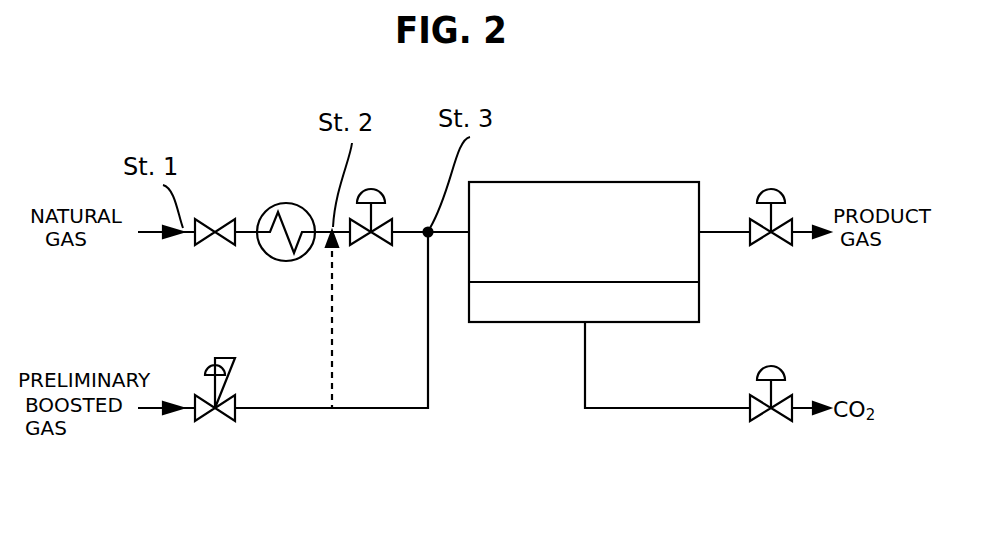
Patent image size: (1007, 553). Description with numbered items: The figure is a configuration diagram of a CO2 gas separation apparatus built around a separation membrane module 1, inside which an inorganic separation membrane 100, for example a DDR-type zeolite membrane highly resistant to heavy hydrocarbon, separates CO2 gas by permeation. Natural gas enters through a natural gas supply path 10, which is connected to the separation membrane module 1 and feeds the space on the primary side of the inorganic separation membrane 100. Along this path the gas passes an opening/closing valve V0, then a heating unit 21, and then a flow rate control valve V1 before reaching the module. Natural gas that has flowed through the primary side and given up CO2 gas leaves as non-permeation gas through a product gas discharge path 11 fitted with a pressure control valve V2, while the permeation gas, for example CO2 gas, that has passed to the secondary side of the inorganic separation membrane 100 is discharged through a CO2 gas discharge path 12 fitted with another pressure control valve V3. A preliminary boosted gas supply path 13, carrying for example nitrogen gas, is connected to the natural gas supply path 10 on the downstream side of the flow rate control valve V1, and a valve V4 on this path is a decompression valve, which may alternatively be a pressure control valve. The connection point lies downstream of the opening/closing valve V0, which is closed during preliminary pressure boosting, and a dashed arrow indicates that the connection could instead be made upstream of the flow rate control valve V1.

The separation membrane module 1 is at (584, 180).
The inorganic separation membrane 100 is at (547, 282).
The natural gas supply path 10 is at (408, 230).
The product gas discharge path 11 is at (722, 228).
The CO2 gas discharge path 12 is at (671, 410).
The preliminary boosted gas supply path 13 is at (378, 410).
The heating unit 21 is at (285, 202).
The opening/closing valve V0 is at (214, 240).
The flow rate control valve V1 is at (368, 240).
The pressure control valve V2 is at (768, 240).
The pressure control valve V3 is at (768, 416).
The decompression valve V4 is at (212, 415).